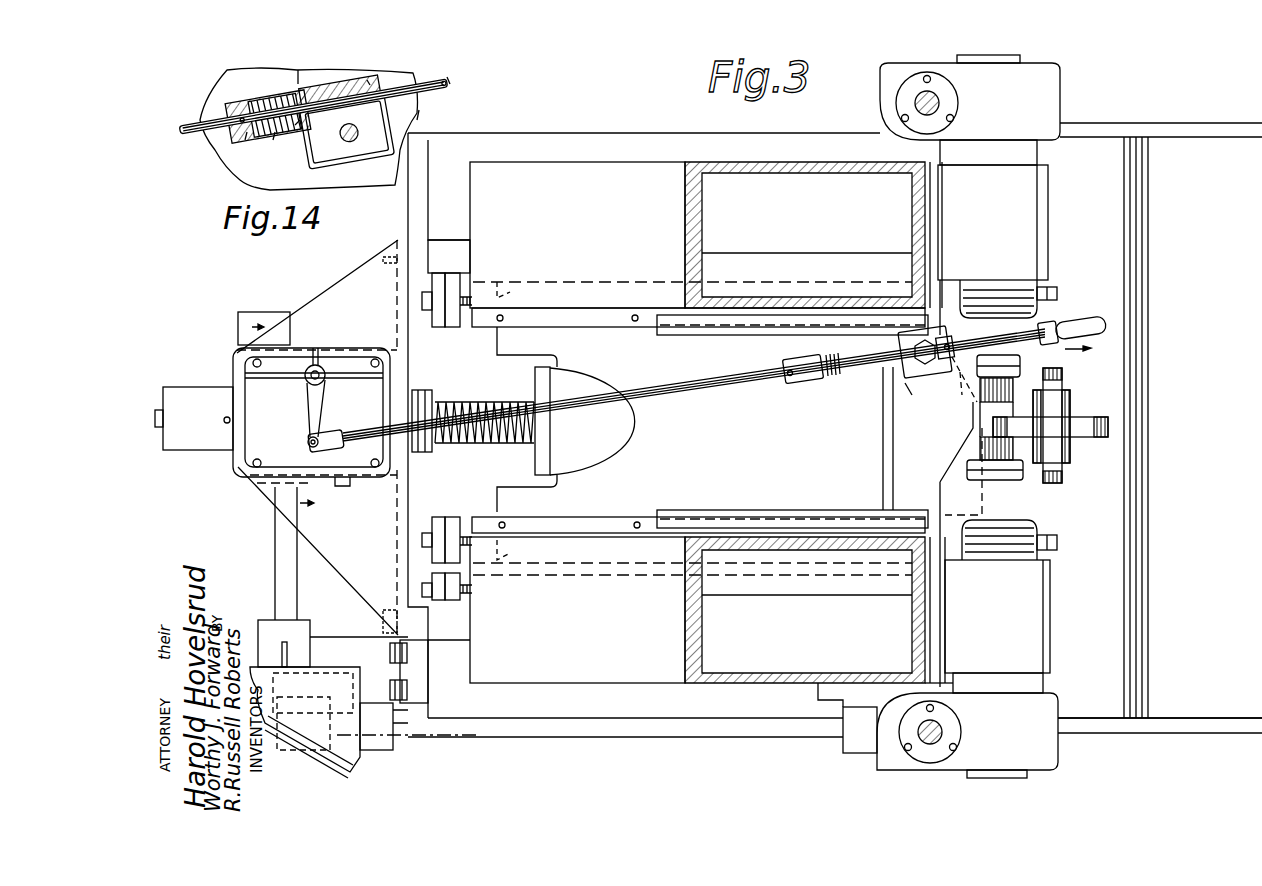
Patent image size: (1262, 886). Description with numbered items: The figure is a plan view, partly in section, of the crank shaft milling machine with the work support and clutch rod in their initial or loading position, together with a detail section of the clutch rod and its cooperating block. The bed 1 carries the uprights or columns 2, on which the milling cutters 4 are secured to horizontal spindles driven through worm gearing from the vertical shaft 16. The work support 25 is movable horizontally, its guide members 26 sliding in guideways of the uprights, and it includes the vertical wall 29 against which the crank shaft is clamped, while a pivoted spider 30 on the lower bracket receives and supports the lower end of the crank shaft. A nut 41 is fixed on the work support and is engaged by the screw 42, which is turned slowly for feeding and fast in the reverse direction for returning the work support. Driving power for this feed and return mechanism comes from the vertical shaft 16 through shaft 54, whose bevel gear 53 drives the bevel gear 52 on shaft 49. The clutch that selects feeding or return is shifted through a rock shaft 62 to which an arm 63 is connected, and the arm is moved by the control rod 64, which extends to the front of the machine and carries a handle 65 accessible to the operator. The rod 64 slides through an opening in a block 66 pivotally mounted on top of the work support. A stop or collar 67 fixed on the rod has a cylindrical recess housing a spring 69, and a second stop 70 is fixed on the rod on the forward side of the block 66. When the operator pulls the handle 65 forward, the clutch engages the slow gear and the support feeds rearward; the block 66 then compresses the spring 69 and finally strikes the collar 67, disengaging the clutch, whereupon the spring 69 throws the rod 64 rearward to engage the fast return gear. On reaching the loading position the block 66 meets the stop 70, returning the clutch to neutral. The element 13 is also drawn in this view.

In FIG. 3, the bed 1 is at (1095, 763).
In FIG. 3, the uprights 2 is at (658, 673).
In FIG. 3, the milling cutters 4 is at (985, 400).
In FIG. 3, the pivoted bracket plate 13 is at (300, 322).
In FIG. 3, the vertical shaft 16 is at (938, 98).
In FIG. 3, the work support 25 is at (592, 431).
In FIG. 3, the guide members 26 is at (512, 293).
In FIG. 3, the vertical wall 29 is at (927, 426).
In FIG. 14, the vertical wall 29 is at (417, 120).
In FIG. 3, the spider 30 is at (1083, 420).
In FIG. 3, the nut 41 is at (540, 384).
In FIG. 3, the screw 42 is at (465, 405).
In FIG. 3, the shaft 49 is at (297, 560).
In FIG. 3, the bevel gear 52 is at (318, 697).
In FIG. 3, the bevel gear 53 is at (327, 763).
In FIG. 3, the shaft 54 is at (547, 727).
In FIG. 3, the rock shaft 62 is at (321, 369).
In FIG. 3, the arm 63 is at (323, 408).
In FIG. 3, the control rod 64 is at (698, 380).
In FIG. 3, the handle 65 is at (1090, 326).
In FIG. 3, the block 66 is at (907, 385).
In FIG. 3, the stop or collar 67 is at (792, 362).
In FIG. 3, the spring 69 is at (837, 365).
In FIG. 3, the second stop 70 is at (950, 337).